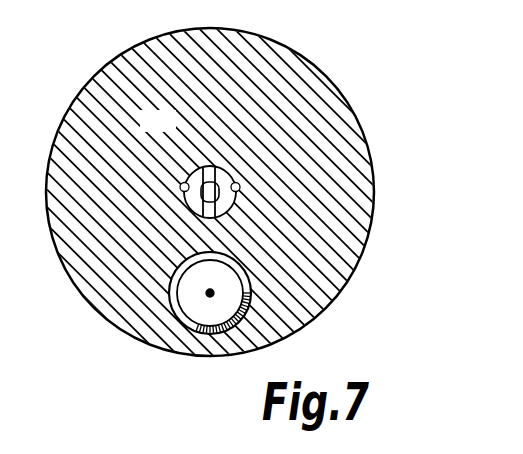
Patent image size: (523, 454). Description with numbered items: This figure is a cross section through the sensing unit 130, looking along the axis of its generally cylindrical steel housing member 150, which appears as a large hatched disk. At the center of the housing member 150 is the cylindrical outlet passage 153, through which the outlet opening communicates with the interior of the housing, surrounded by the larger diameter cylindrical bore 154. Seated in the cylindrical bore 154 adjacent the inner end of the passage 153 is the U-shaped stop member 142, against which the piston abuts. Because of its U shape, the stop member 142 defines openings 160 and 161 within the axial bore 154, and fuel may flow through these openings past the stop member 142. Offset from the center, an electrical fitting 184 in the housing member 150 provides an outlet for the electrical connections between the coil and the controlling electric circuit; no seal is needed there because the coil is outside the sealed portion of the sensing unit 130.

The sensing unit 130 is at (261, 227).
The stop member 142 is at (218, 168).
The housing member 150 is at (288, 73).
The outlet passage 153 is at (197, 168).
The cylindrical bore 154 is at (192, 203).
The opening 160 is at (181, 188).
The opening 161 is at (240, 186).
The electrical fitting 184 is at (198, 311).